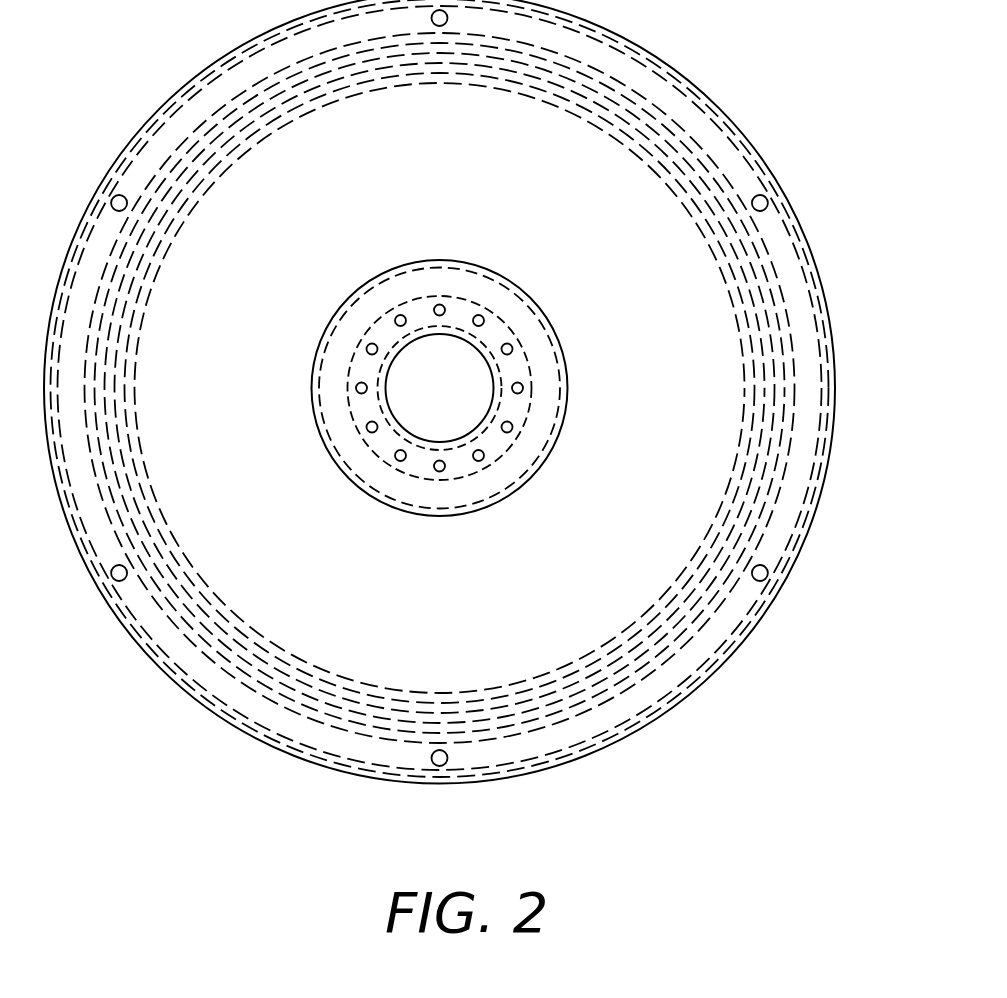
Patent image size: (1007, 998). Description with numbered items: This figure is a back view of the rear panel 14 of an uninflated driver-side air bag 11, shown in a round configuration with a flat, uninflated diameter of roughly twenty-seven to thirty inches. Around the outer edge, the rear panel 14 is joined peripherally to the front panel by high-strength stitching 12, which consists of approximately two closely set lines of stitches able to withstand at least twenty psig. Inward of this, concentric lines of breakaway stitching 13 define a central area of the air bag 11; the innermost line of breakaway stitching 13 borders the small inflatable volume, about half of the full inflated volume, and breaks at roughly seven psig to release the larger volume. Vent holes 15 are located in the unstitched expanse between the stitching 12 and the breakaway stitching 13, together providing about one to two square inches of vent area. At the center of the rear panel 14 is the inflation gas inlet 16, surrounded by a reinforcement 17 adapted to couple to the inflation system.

The air bag 11 is at (235, 195).
The high-strength stitching 12 is at (820, 297).
The breakaway stitching 13 is at (667, 178).
The rear panel 14 is at (317, 522).
The vent holes 15 is at (768, 201).
The inflation gas inlet 16 is at (390, 372).
The reinforcement 17 is at (538, 342).